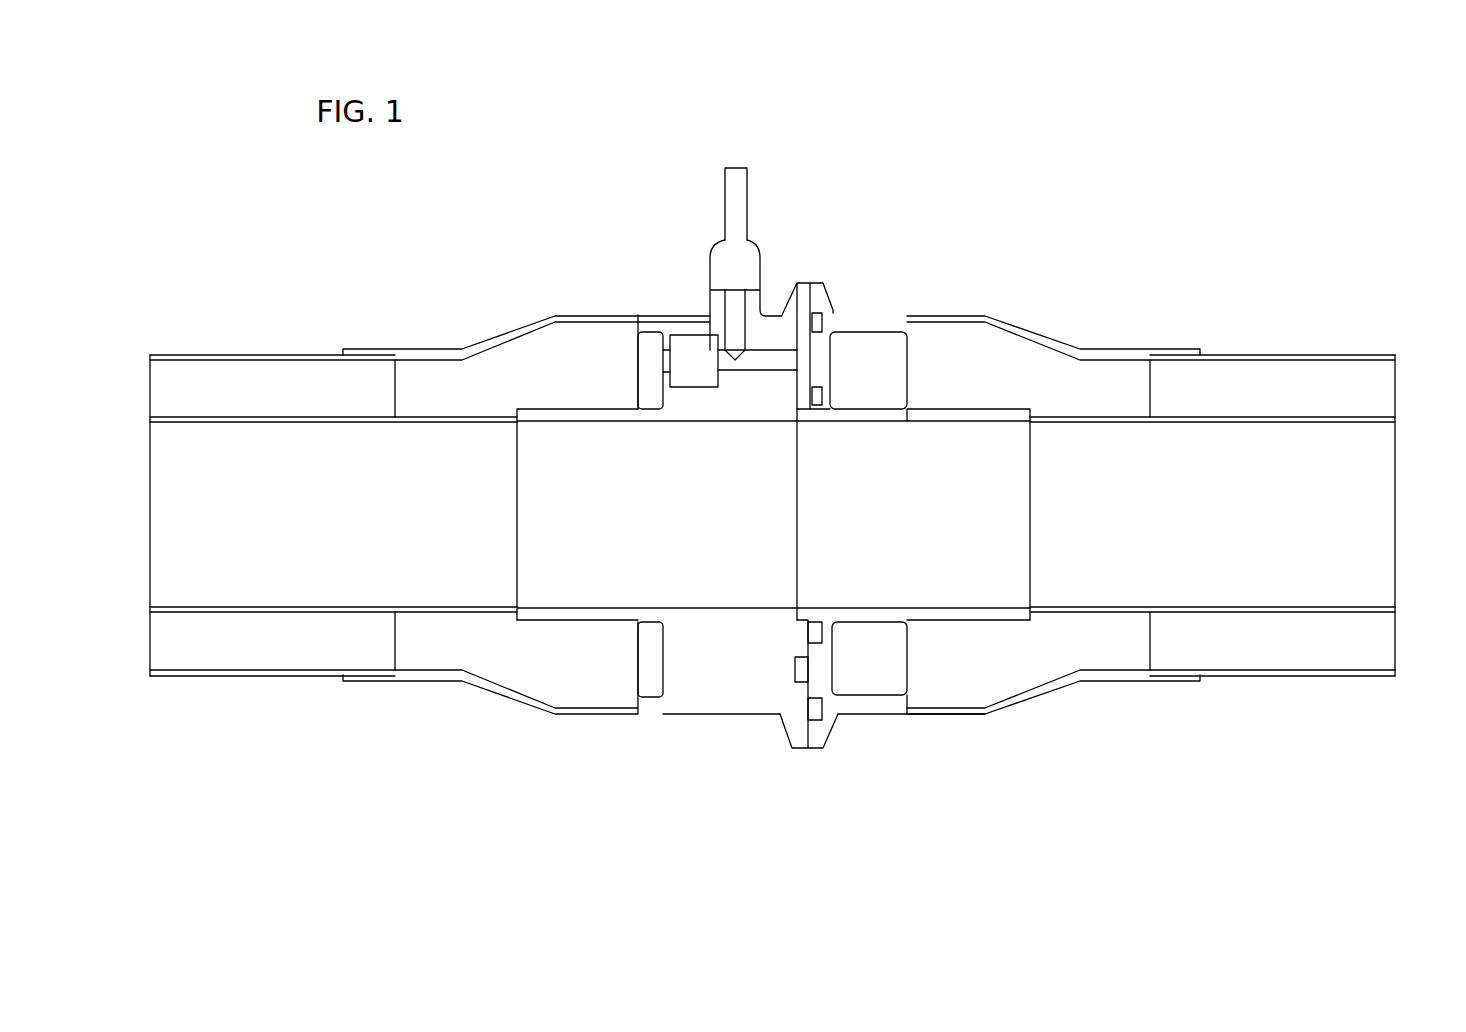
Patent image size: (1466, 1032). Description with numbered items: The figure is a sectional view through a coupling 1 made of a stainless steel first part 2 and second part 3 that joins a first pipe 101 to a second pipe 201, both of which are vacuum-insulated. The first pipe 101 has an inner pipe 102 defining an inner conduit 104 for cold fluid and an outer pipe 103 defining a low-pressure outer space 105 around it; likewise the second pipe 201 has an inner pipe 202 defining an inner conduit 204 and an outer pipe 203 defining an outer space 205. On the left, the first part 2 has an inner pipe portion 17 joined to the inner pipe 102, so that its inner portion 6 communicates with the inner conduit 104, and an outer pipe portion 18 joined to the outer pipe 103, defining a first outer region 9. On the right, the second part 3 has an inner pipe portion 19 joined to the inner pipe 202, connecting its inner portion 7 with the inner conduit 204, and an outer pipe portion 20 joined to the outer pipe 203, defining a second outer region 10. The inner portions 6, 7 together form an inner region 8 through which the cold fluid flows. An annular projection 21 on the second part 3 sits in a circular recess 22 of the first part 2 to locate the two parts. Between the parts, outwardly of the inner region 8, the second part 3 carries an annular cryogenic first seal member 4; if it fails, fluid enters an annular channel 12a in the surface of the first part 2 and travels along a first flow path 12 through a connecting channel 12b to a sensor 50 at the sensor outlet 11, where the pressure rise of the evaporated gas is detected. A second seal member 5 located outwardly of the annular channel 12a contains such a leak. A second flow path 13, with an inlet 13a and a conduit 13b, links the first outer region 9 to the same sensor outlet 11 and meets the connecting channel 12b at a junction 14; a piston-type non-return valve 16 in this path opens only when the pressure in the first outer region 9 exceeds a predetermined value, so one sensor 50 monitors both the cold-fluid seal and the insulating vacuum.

The coupling 1 is at (837, 197).
The first part 2 is at (786, 722).
The second part 3 is at (822, 323).
The first seal member 4 is at (822, 393).
The second seal member 5 is at (825, 333).
The inner portion 6 is at (570, 516).
The inner portion 7 is at (925, 520).
The inner region 8 is at (812, 523).
The first outer region 9 is at (552, 363).
The second outer region 10 is at (867, 665).
The sensor outlet 11 is at (733, 327).
The first flow path 12 is at (768, 360).
The annular channel 12a is at (802, 670).
The connecting channel 12b is at (782, 360).
The second flow path 13 is at (637, 333).
The inlet 13a is at (657, 362).
The conduit 13b is at (700, 343).
The junction 14 is at (688, 350).
The non-return valve 16 is at (662, 335).
The inner pipe portion 17 is at (580, 618).
The outer pipe portion 18 is at (618, 715).
The inner pipe portion 19 is at (998, 615).
The outer pipe portion 20 is at (1090, 685).
The annular projection 21 is at (798, 588).
The circular recess 22 is at (787, 702).
The sensor 50 is at (737, 210).
The first pipe 101 is at (235, 697).
The inner pipe 102 is at (175, 418).
The outer pipe 103 is at (310, 683).
The inner conduit 104 is at (197, 472).
The outer space 105 is at (196, 638).
The second pipe 201 is at (1300, 710).
The inner pipe 202 is at (1325, 355).
The outer pipe 203 is at (1342, 418).
The inner conduit 204 is at (1375, 548).
The outer space 205 is at (1205, 388).